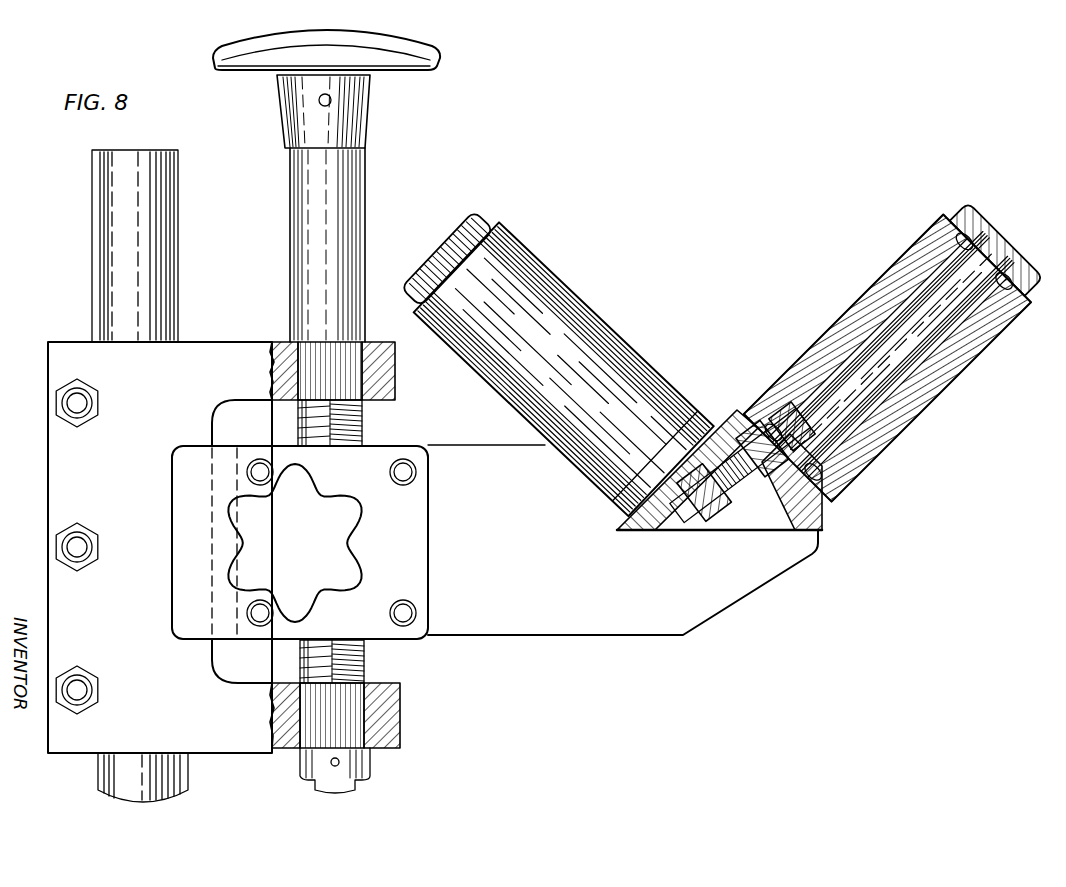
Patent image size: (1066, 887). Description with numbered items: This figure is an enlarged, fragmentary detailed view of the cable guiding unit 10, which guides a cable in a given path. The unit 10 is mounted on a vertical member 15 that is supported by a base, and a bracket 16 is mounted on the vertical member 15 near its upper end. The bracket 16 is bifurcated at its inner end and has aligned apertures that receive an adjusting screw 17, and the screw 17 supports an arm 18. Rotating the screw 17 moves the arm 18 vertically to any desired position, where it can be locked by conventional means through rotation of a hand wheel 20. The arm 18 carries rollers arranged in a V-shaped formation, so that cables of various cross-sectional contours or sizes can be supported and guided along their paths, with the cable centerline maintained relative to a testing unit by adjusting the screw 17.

The unit 10 is at (557, 180).
The vertical member 15 is at (104, 220).
The bracket 16 is at (60, 441).
The adjusting screw 17 is at (304, 200).
The arm 18 is at (478, 452).
The hand wheel 20 is at (352, 564).